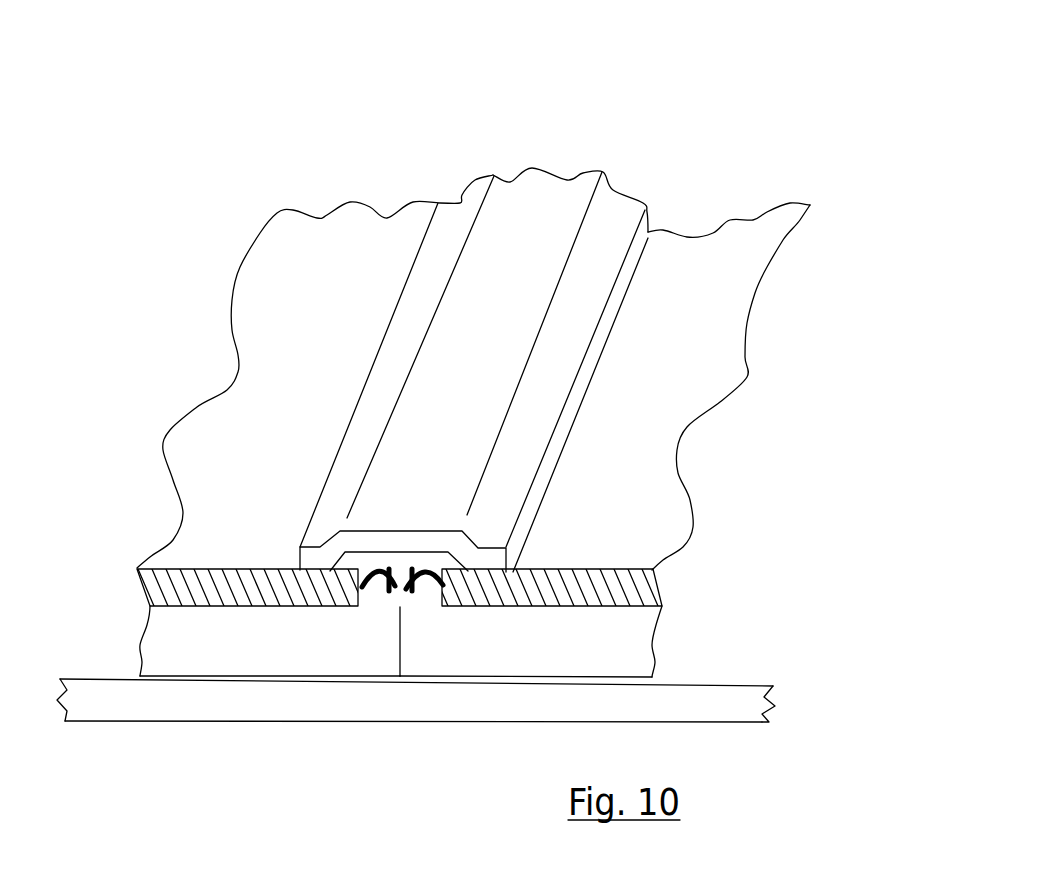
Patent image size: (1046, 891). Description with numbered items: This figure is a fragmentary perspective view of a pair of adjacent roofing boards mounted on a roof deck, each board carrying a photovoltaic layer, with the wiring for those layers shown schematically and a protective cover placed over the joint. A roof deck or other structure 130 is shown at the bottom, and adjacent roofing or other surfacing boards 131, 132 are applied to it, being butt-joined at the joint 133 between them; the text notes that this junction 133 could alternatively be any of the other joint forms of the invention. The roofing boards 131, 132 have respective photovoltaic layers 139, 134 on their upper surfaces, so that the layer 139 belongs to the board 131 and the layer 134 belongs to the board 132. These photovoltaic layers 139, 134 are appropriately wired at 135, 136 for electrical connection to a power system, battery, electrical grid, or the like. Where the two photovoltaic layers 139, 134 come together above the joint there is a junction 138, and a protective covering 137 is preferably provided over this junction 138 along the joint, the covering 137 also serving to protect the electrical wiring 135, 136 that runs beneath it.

The roof deck 130 is at (735, 693).
The roofing board 131 is at (162, 642).
The roofing board 132 is at (627, 645).
The butt joint 133 is at (402, 663).
The photovoltaic layer 134 is at (663, 503).
The electrical wiring 135 is at (383, 553).
The electrical wiring 136 is at (448, 553).
The protective covering 137 is at (555, 195).
The junction of photovoltaic layers 138 is at (383, 600).
The photovoltaic layer 139 is at (200, 542).